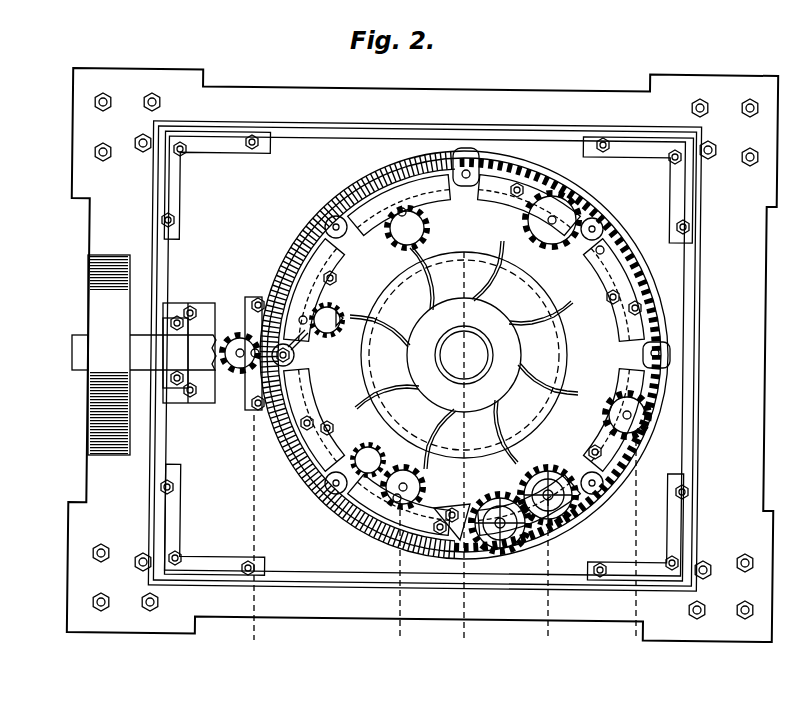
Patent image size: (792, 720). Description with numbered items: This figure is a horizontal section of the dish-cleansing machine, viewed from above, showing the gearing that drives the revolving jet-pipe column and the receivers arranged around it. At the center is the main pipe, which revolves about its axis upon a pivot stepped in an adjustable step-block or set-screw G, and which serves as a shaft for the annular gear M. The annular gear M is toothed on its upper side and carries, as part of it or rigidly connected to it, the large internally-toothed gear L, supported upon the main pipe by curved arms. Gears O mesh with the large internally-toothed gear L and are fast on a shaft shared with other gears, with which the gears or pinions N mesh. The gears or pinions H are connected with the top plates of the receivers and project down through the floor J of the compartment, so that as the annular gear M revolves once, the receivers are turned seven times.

The gears or pinions H is at (464, 355).
The floor J is at (464, 355).
The gear wheels K is at (446, 358).
The large internally-toothed gear L is at (471, 344).
The annular gear M is at (468, 352).
The gears or pinions N is at (433, 402).
The gears O is at (500, 516).
The adjustable step-block or set-screw G is at (342, 320).